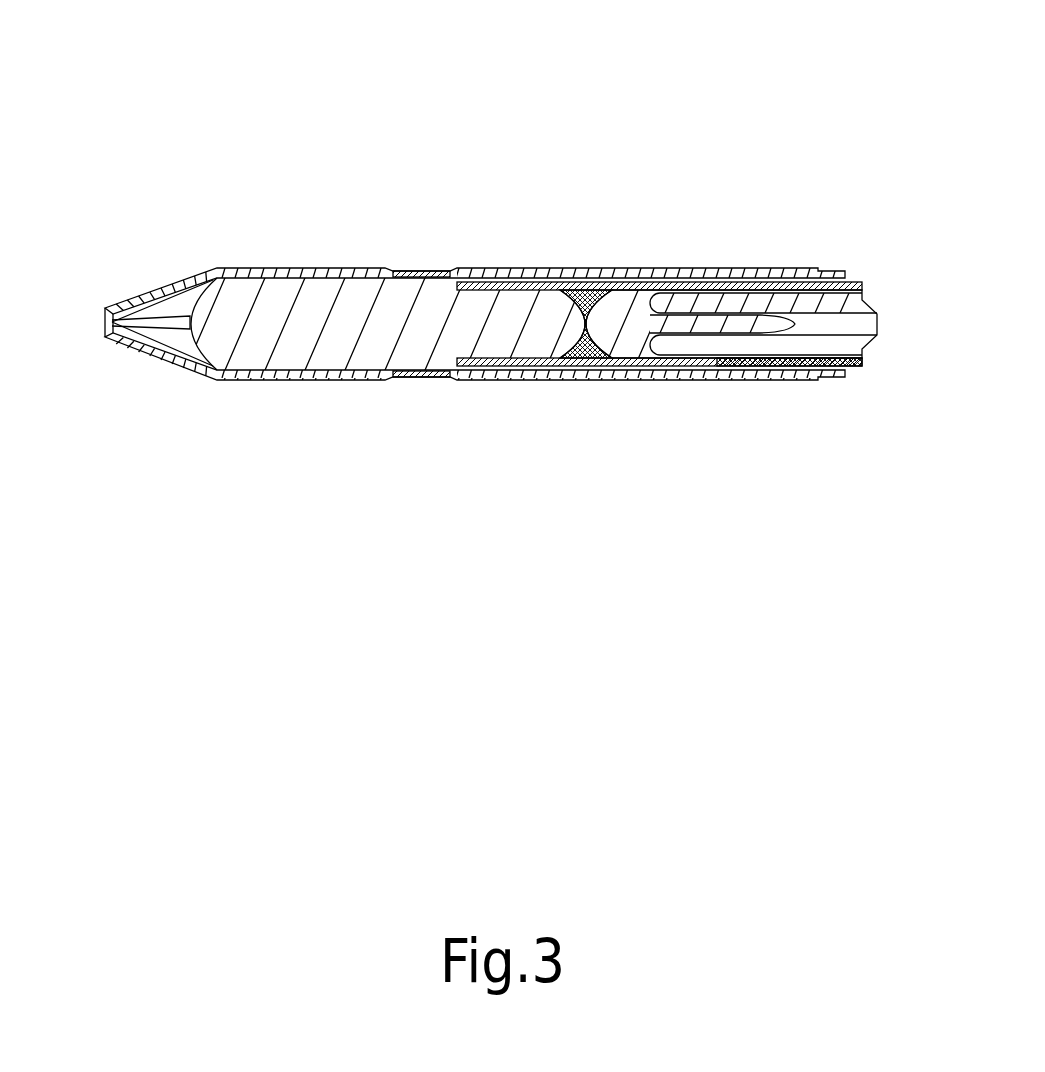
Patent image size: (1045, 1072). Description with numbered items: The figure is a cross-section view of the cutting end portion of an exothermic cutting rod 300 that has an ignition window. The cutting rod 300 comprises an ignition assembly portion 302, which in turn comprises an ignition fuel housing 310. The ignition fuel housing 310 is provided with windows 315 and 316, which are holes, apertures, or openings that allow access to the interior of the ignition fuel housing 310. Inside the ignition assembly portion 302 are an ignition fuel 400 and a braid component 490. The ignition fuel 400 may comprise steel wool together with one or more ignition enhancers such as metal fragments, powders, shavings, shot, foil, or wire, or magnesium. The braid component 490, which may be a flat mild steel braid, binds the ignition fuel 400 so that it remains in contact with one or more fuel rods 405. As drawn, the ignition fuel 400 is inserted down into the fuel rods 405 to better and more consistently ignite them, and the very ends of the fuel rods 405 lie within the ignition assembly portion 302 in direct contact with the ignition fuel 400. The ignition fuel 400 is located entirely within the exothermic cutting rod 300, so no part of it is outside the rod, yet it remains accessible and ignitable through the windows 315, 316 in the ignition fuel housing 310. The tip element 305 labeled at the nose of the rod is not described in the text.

The exothermic cutting rod 300 is at (488, 243).
The ignition assembly portion 302 is at (475, 275).
The tip 305 is at (182, 318).
The ignition fuel housing 310 is at (690, 268).
The window 315 is at (423, 268).
The window 316 is at (410, 380).
The ignition fuel 400 is at (330, 298).
The fuel rods 405 is at (840, 305).
The braid component 490 is at (588, 290).